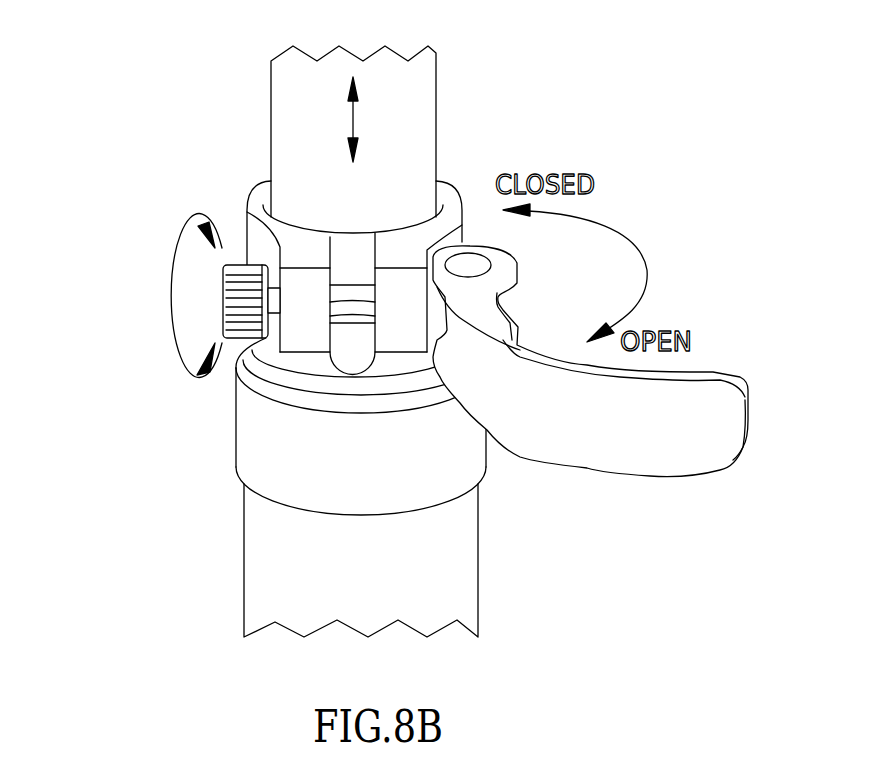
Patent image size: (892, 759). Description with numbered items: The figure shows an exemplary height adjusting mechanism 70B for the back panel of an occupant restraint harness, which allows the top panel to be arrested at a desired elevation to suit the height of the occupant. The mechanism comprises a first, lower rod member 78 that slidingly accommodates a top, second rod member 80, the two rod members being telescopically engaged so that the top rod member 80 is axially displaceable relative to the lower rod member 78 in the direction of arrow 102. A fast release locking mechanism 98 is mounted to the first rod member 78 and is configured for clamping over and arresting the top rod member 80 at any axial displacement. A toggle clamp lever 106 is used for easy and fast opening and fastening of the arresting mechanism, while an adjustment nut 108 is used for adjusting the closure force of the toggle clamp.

The height adjusting mechanism 70B is at (207, 188).
The second rod member 80 is at (436, 90).
The arrow 102 is at (352, 116).
The adjustment nut 108 is at (230, 307).
The fast release locking mechanism 98 is at (227, 353).
The first rod member 78 is at (468, 558).
The toggle clamp lever 106 is at (675, 452).